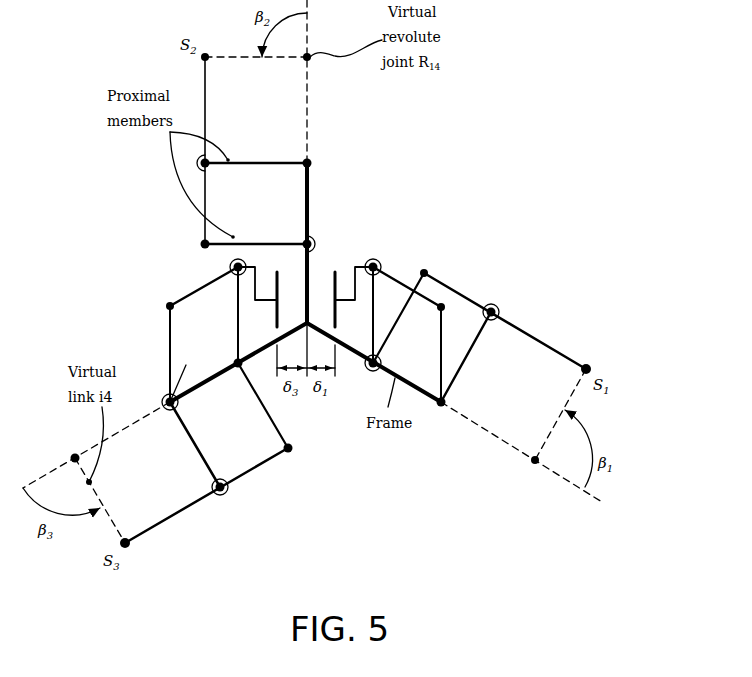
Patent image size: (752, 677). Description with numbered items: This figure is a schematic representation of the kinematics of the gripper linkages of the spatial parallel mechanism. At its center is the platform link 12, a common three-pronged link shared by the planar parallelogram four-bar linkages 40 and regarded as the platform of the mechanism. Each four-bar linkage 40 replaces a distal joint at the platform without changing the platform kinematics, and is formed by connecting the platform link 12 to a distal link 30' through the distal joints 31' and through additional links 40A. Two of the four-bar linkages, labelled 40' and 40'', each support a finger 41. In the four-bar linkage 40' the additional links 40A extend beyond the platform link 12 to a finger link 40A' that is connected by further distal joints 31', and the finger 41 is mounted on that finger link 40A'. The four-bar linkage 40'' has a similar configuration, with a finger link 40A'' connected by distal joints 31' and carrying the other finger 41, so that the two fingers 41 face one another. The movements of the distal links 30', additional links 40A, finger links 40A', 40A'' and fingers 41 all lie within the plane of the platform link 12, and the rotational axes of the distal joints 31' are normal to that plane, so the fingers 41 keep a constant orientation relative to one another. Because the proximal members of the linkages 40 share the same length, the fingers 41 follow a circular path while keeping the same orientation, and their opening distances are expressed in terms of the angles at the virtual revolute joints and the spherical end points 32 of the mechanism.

The planar parallelogram four-bar linkage 40 is at (305, 154).
The four-bar linkage 40' is at (141, 334).
The four-bar linkage 40'' is at (483, 278).
The additional link 40A is at (340, 382).
The finger link 40A' is at (184, 329).
The finger link 40A'' is at (426, 313).
The finger 41 is at (285, 283).
The distal joint 31' is at (345, 399).
The distal link 30' is at (365, 439).
The spherical joint 32 is at (132, 550).
The platform link 12 is at (353, 358).